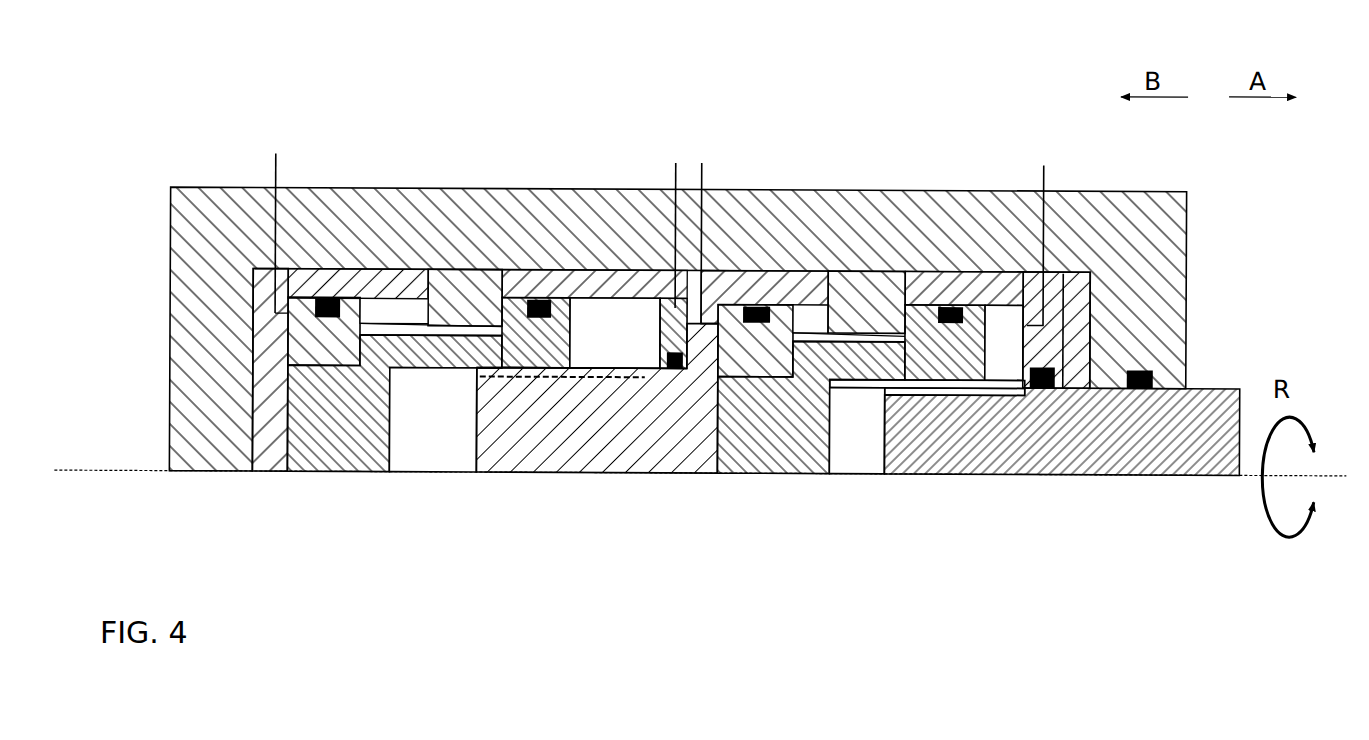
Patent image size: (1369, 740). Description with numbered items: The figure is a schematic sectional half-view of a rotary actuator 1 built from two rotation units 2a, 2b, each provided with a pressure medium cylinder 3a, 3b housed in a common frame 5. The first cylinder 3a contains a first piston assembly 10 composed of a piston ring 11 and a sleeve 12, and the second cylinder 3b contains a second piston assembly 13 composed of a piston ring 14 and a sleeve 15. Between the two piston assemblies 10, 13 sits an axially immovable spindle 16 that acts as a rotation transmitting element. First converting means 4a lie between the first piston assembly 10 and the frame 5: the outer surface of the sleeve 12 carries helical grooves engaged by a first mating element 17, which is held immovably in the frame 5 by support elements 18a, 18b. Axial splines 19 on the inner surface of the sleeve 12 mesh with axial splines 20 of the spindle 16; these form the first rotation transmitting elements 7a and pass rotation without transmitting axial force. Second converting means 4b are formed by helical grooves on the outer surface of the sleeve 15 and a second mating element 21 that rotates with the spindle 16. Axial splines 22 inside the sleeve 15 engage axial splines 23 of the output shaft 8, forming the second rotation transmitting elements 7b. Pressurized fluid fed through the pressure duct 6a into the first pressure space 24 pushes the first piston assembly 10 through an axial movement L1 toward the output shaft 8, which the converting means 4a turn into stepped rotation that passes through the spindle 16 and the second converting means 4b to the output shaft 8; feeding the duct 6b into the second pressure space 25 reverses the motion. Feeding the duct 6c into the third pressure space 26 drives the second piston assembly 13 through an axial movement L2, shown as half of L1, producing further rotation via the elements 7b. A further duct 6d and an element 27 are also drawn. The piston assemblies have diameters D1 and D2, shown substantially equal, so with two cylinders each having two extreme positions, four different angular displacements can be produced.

The rotary actuator 1 is at (170, 107).
The first rotation unit 2a is at (473, 541).
The second rotation unit 2b is at (817, 541).
The first cylinder 3a is at (323, 495).
The second cylinder 3b is at (762, 498).
The first converting means 4a is at (405, 306).
The second converting means 4b is at (810, 307).
The frame 5 is at (172, 252).
The pressure duct 6a is at (272, 177).
The duct 6b is at (672, 175).
The duct 6c is at (705, 175).
The fourth housing part boundary 6d is at (1040, 173).
The first rotation transmitting elements 7a is at (485, 391).
The second rotation transmitting elements 7b is at (935, 397).
The output shaft 8 is at (1042, 466).
The first piston assembly 10 is at (393, 504).
The piston ring 11 is at (355, 299).
The sleeve 12 is at (340, 457).
The second piston assembly 13 is at (885, 531).
The piston ring 14 is at (785, 300).
The sleeve 15 is at (790, 459).
The spindle 16 is at (578, 461).
The first mating element 17 is at (472, 276).
The support element 18a is at (380, 271).
The support element 18b is at (566, 271).
The axial splines 19 is at (418, 379).
The axial splines 20 is at (530, 381).
The second mating element 21 is at (878, 292).
The axial splines 22 is at (863, 389).
The axial splines 23 is at (962, 409).
The first pressure space 24 is at (290, 190).
The second pressure space 25 is at (595, 301).
The third pressure space 26 is at (762, 305).
The second sliding ring 27 is at (1005, 299).
The first diameter D1 is at (283, 405).
The second diameter D2 is at (707, 420).
The axial movement L1 is at (640, 344).
The axial movement L2 is at (1020, 359).